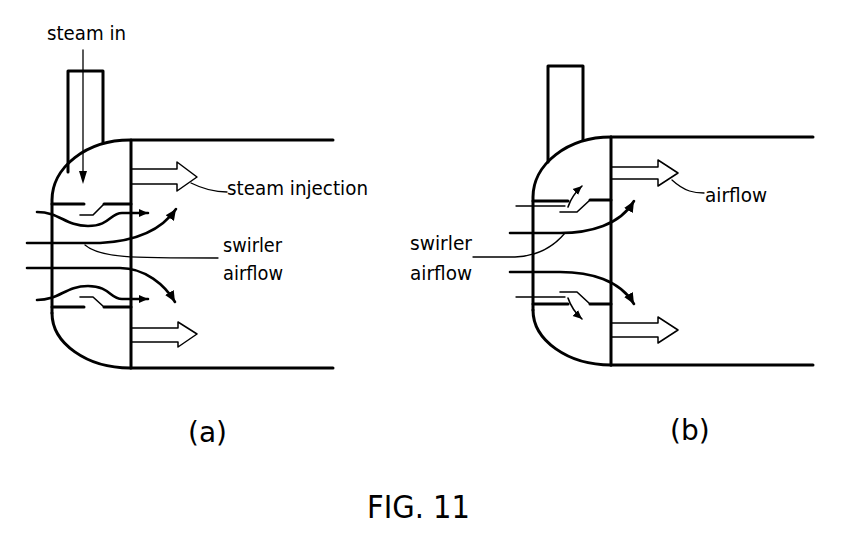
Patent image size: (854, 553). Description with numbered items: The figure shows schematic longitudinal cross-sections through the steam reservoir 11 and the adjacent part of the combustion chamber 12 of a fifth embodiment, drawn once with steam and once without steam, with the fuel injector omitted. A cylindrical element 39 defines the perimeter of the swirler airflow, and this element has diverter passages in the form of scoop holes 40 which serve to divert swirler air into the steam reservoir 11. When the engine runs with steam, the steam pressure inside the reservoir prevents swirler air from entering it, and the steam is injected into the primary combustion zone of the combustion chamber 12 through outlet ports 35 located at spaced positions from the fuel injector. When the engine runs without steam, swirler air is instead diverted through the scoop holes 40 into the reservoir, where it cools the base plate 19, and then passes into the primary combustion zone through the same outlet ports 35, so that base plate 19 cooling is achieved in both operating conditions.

The steam reservoir 11 is at (72, 185).
The combustion chamber 12 is at (290, 162).
The base plate 19 is at (134, 322).
The outlet ports 35 is at (133, 339).
The cylindrical element 39 is at (117, 202).
The scoop holes 40 is at (95, 307).